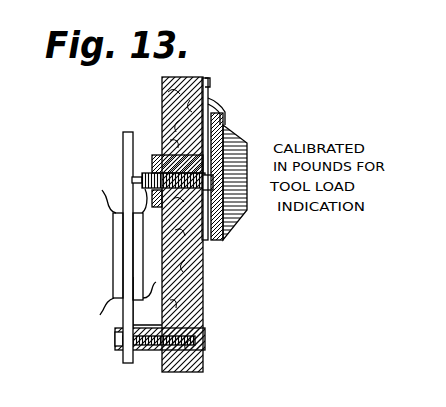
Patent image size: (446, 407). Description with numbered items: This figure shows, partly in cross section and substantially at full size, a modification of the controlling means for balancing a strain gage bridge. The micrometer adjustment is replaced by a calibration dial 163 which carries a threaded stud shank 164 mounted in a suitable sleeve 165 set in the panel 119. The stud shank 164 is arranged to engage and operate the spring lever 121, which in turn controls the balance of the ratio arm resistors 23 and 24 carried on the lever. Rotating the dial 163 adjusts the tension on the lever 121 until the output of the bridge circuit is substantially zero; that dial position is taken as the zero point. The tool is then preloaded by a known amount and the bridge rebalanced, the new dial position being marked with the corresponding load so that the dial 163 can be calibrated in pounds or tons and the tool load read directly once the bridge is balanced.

The resistor 23 is at (113, 280).
The resistor 24 is at (167, 288).
The panel 119 is at (200, 320).
The lever 121 is at (123, 153).
The calibration dial 163 is at (225, 128).
The threaded stud shank 164 is at (141, 176).
The sleeve 165 is at (208, 244).